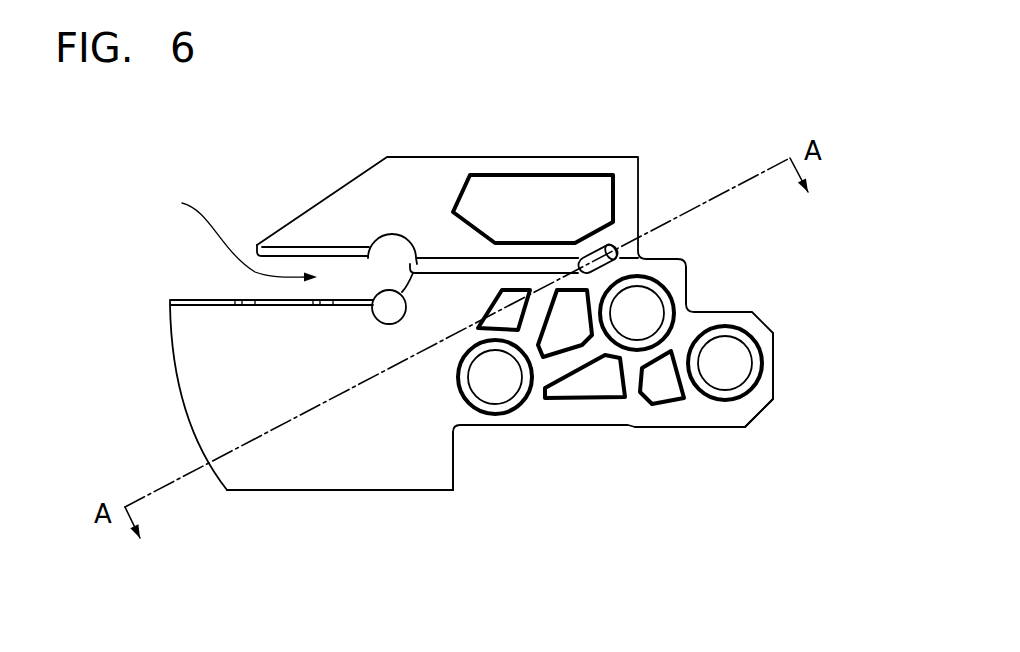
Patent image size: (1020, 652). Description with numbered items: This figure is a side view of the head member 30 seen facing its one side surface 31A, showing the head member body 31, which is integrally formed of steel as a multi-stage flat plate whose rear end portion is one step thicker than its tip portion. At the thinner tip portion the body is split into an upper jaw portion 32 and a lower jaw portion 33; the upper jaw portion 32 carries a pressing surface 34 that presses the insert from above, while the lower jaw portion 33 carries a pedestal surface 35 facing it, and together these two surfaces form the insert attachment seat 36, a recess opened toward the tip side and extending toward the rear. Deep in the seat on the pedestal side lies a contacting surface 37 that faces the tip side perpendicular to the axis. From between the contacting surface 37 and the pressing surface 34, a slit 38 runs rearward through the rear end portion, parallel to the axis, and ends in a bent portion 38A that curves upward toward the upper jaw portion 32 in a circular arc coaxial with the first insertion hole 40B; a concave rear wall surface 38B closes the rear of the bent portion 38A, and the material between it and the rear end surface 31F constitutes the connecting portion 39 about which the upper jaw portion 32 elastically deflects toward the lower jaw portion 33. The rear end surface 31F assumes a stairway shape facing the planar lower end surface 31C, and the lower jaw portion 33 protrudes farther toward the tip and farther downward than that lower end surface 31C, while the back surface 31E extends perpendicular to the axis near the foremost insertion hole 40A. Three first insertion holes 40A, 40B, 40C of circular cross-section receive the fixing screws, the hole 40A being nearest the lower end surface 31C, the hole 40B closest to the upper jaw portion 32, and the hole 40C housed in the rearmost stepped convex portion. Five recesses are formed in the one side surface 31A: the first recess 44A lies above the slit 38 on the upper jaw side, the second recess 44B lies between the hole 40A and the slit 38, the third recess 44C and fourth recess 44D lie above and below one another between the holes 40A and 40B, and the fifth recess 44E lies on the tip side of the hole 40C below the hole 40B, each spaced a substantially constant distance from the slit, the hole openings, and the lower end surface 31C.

The head member 30 is at (658, 118).
The head member body 31 is at (478, 157).
The one side surface 31A is at (740, 410).
The lower end surface 31C is at (648, 427).
The back surface 31E is at (455, 472).
The rear end surface 31F is at (710, 261).
The upper jaw portion 32 is at (350, 200).
The lower jaw portion 33 is at (305, 467).
The pressing surface 34 is at (285, 262).
The pedestal surface 35 is at (200, 300).
The insert attachment seat 36 is at (231, 234).
The contacting surface 37 is at (372, 298).
The slit 38 is at (471, 252).
The bent portion 38A is at (590, 238).
The rear wall surface 38B is at (605, 245).
The connecting portion 39 is at (620, 246).
The first insertion hole 40A is at (497, 378).
The first insertion hole 40B is at (640, 315).
The first insertion hole 40C is at (728, 367).
The first recess 44A is at (552, 197).
The second recess 44B is at (503, 318).
The third recess 44C is at (568, 327).
The fourth recess 44D is at (593, 383).
The fifth recess 44E is at (667, 387).